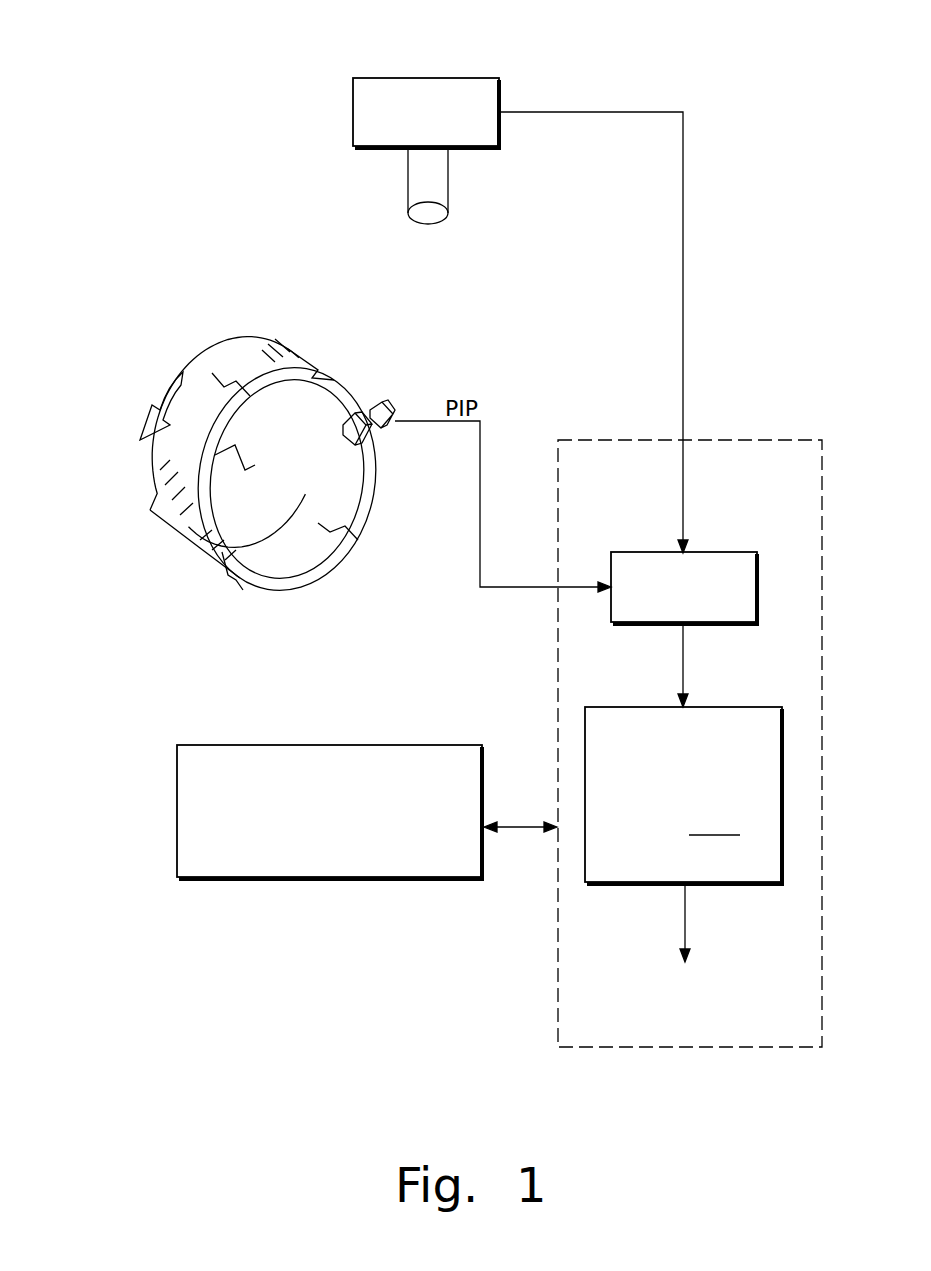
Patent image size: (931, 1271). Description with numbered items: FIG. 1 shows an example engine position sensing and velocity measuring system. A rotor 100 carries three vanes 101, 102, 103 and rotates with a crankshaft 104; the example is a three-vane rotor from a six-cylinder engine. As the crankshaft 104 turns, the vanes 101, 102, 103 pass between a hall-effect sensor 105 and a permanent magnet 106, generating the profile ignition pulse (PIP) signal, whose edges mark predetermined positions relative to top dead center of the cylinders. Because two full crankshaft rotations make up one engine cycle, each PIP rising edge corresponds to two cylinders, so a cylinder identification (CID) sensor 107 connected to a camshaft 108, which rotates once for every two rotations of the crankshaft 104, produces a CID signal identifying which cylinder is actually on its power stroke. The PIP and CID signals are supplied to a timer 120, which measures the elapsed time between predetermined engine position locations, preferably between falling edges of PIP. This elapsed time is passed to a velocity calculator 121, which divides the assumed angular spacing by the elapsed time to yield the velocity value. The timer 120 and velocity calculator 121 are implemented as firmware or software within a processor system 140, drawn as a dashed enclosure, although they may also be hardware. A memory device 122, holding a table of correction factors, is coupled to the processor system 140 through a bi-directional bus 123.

The rotor 100 is at (300, 362).
The vane 101 is at (218, 443).
The vane 102 is at (347, 503).
The vane 103 is at (249, 592).
The crankshaft 104 is at (222, 372).
The hall-effect sensor 105 is at (390, 400).
The permanent magnet 106 is at (347, 448).
The cylinder identification (CID) sensor 107 is at (462, 78).
The camshaft 108 is at (406, 182).
The timer 120 is at (720, 552).
The velocity calculator 121 is at (745, 707).
The memory device 122 is at (216, 884).
The bi-directional bus 123 is at (510, 870).
The processor system 140 is at (766, 440).